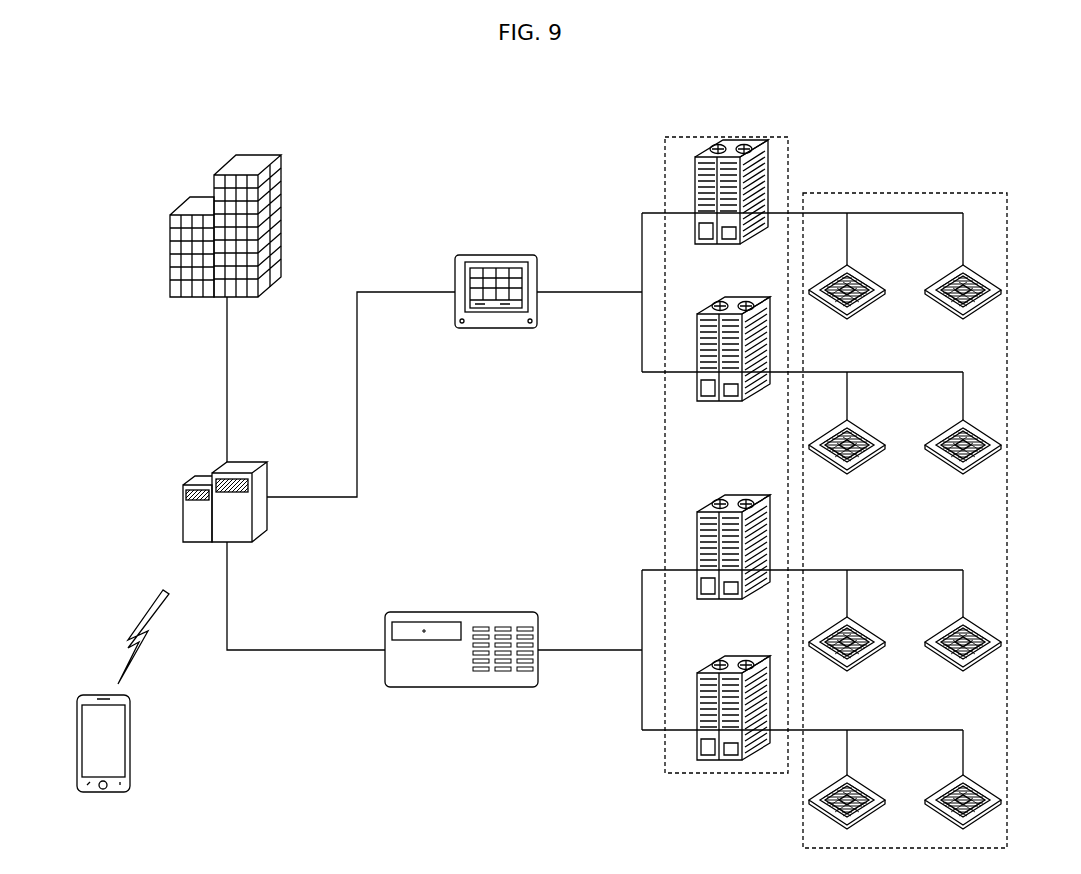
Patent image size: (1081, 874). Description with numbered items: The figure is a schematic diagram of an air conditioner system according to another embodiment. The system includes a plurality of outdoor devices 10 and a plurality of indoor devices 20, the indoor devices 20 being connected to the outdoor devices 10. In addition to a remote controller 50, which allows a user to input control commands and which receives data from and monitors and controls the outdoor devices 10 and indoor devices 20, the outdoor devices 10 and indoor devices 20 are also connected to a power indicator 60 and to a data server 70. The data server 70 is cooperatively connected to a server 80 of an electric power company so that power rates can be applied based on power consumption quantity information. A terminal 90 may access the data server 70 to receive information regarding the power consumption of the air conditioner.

The outdoor devices 10 is at (772, 137).
The indoor devices 20 is at (979, 193).
The remote controller 50 is at (521, 255).
The power indicator 60 is at (518, 612).
The data server 70 is at (256, 460).
The server of an electric power company 80 is at (281, 199).
The terminal 90 is at (130, 742).